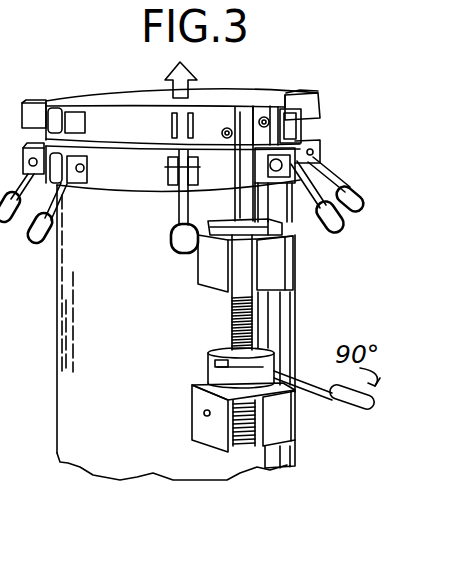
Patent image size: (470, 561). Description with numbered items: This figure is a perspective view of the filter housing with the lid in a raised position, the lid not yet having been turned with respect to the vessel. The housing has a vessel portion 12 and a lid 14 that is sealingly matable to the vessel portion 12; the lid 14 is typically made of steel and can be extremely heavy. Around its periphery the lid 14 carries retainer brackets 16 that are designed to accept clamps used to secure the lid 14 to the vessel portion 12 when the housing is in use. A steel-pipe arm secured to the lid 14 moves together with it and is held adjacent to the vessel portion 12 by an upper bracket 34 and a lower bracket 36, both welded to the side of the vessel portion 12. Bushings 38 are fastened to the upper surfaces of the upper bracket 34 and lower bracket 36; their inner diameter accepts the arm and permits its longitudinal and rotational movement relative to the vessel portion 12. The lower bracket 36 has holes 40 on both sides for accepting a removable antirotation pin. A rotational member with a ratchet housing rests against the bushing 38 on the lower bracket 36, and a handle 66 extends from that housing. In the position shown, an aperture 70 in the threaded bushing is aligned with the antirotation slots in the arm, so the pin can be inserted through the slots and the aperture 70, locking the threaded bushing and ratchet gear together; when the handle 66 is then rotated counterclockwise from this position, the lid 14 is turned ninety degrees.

The vessel portion 12 is at (133, 250).
The lid 14 is at (130, 97).
The retainer brackets 16 is at (23, 115).
The upper bracket 34 is at (278, 272).
The lower bracket 36 is at (217, 442).
The bushings 38 is at (297, 220).
The holes 40 is at (192, 414).
The handle 66 is at (347, 398).
The aperture 70 is at (210, 357).